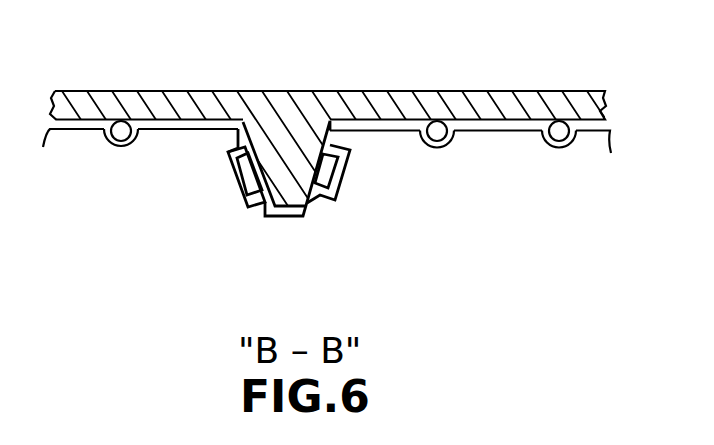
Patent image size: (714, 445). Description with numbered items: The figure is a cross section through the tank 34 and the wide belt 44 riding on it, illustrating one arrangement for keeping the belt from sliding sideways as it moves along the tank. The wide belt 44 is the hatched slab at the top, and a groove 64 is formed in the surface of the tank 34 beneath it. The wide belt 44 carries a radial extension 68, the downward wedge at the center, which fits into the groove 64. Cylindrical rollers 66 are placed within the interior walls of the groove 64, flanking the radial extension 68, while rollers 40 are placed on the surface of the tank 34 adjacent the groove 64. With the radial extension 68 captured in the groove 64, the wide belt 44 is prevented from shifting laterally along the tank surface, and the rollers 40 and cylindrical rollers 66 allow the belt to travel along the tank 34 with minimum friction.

The wide belt 44 is at (412, 91).
The tank 34 is at (498, 131).
The rollers 40 is at (437, 143).
The radial extension 68 is at (291, 190).
The groove 64 is at (265, 208).
The cylindrical rollers 66 is at (340, 188).